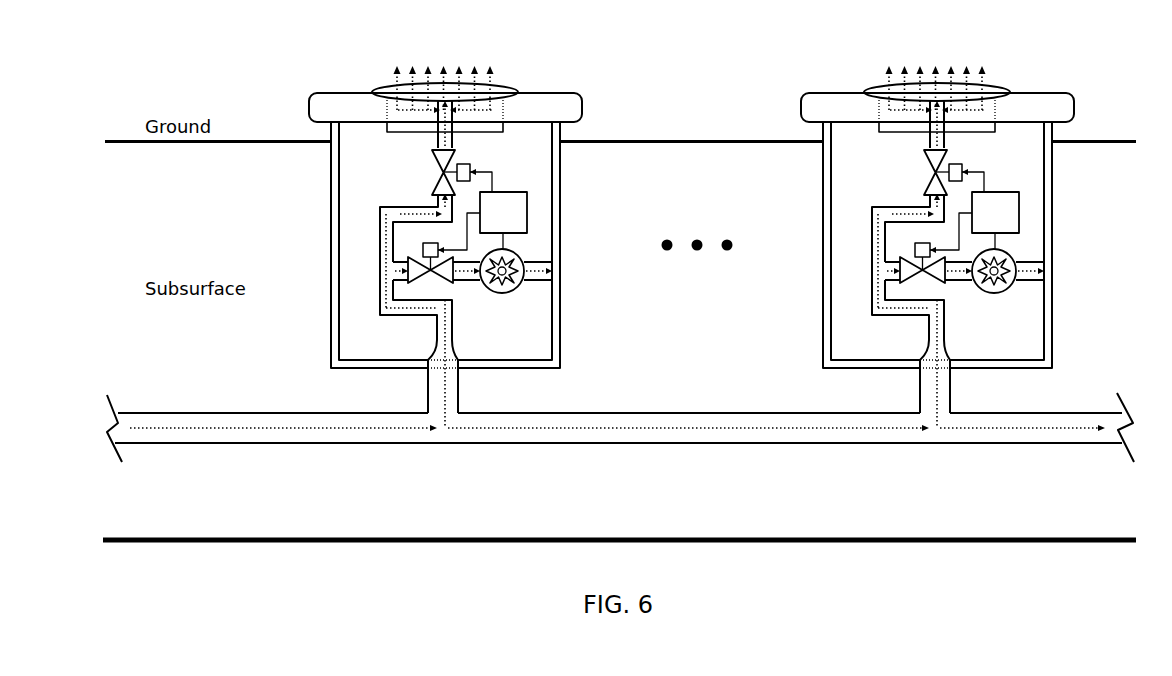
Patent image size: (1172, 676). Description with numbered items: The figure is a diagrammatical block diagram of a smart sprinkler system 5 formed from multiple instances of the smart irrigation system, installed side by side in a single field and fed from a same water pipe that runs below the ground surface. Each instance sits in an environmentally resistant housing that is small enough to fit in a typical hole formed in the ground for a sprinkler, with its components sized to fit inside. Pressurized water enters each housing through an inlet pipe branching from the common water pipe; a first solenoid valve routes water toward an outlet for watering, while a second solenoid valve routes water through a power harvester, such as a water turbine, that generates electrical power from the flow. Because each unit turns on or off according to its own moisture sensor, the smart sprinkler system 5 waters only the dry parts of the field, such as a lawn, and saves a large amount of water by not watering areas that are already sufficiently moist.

The smart sprinkler system 5 is at (660, 40).